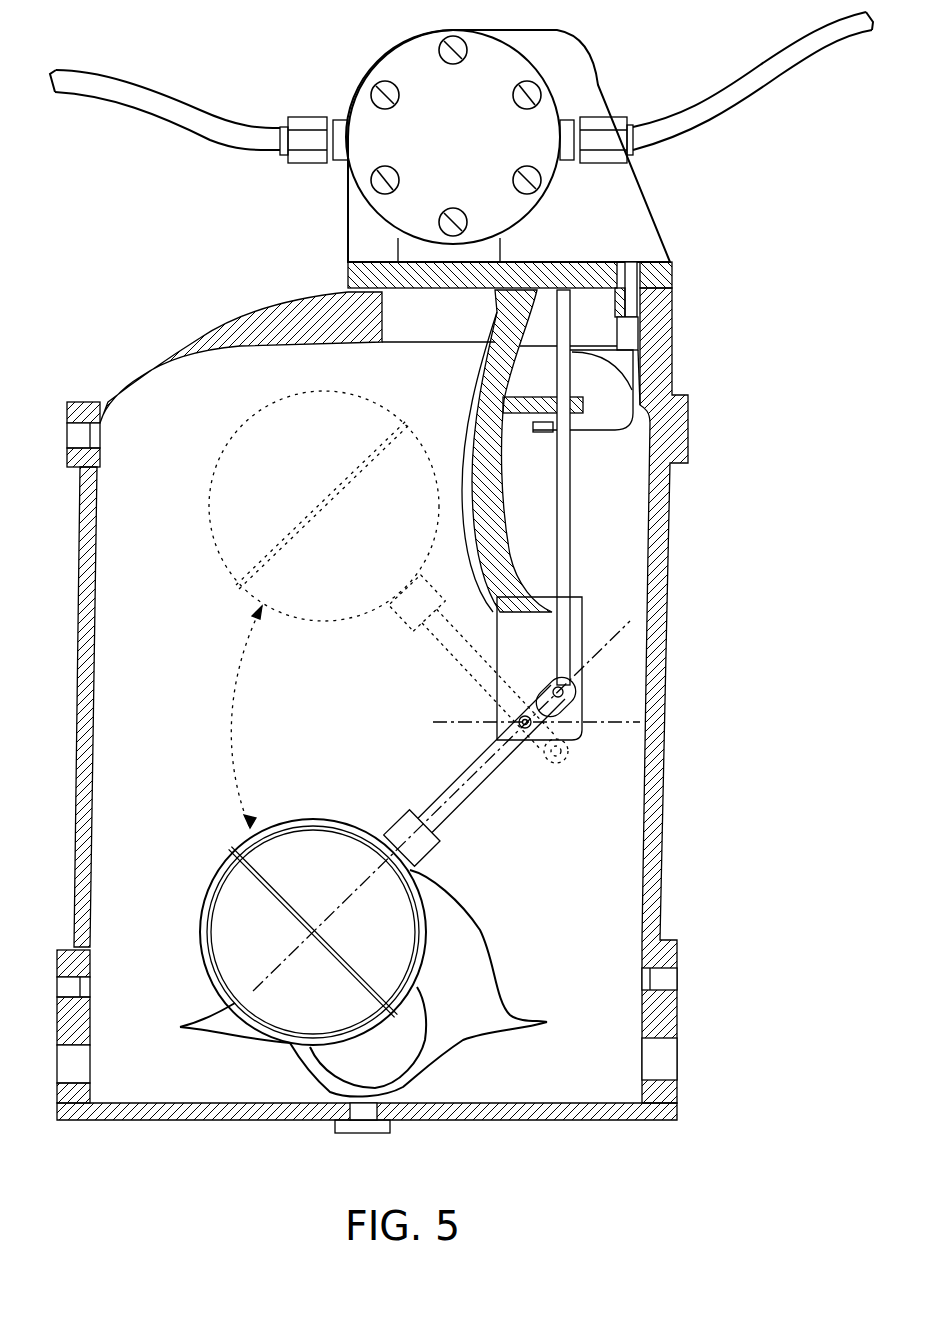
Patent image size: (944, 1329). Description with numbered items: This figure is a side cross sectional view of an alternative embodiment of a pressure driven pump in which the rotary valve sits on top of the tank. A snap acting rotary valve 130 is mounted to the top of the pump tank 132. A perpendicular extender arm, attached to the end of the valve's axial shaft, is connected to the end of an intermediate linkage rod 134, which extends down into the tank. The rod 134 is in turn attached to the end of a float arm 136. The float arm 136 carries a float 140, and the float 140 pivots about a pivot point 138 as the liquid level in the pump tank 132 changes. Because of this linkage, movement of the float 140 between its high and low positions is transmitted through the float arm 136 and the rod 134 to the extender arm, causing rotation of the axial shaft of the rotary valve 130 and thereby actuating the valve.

The snap acting rotary valve 130 is at (430, 68).
The pump tank 132 is at (122, 372).
The intermediate linkage rod 134 is at (565, 483).
The float arm 136 is at (470, 790).
The pivot point 138 is at (520, 718).
The float 140 is at (230, 487).